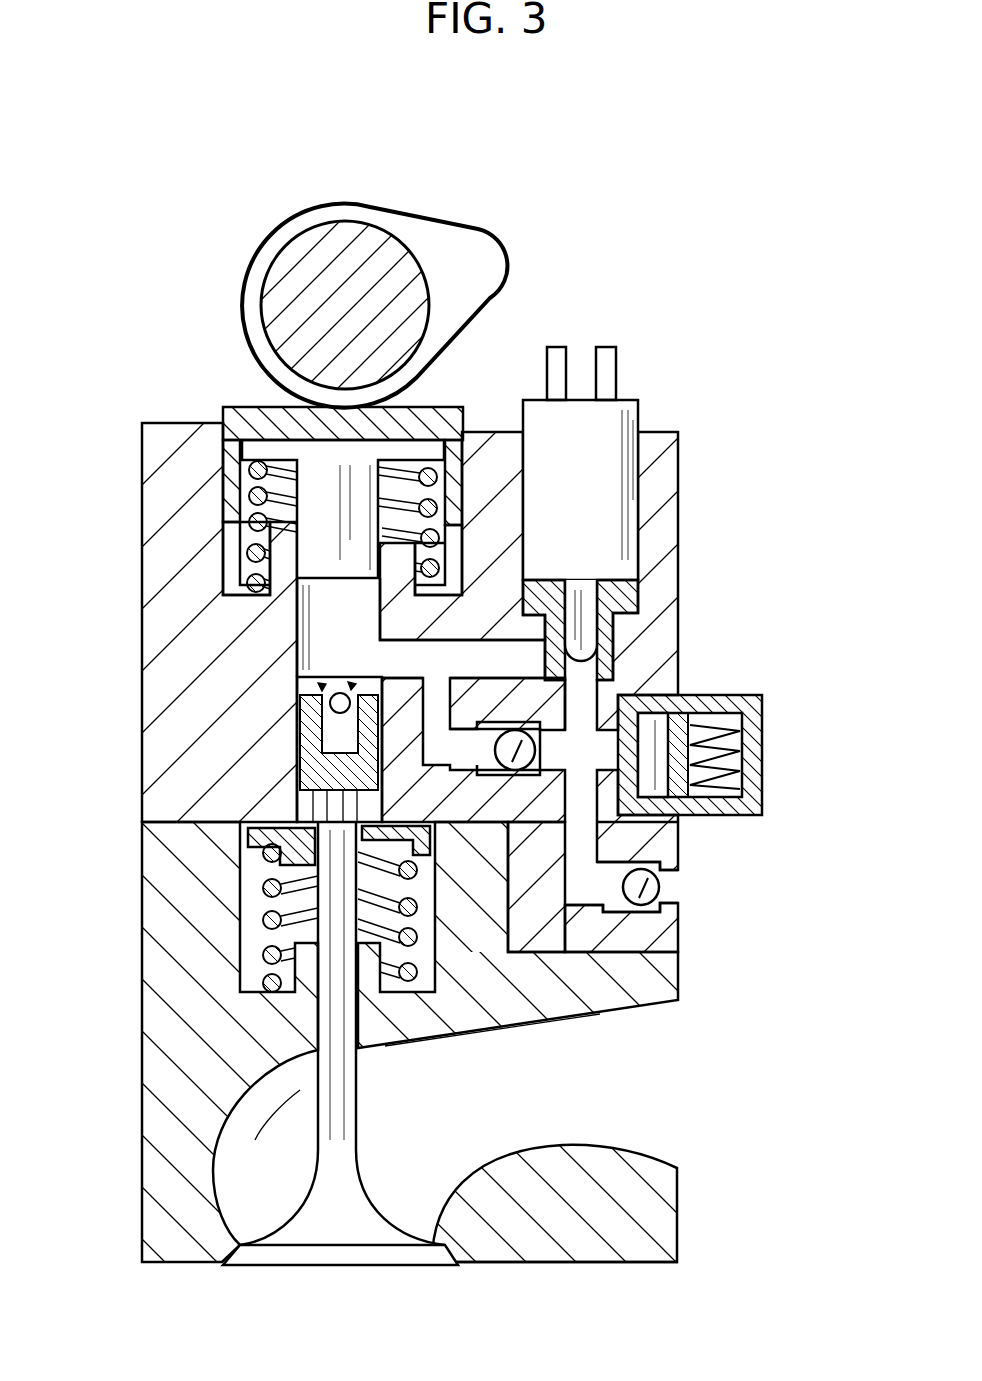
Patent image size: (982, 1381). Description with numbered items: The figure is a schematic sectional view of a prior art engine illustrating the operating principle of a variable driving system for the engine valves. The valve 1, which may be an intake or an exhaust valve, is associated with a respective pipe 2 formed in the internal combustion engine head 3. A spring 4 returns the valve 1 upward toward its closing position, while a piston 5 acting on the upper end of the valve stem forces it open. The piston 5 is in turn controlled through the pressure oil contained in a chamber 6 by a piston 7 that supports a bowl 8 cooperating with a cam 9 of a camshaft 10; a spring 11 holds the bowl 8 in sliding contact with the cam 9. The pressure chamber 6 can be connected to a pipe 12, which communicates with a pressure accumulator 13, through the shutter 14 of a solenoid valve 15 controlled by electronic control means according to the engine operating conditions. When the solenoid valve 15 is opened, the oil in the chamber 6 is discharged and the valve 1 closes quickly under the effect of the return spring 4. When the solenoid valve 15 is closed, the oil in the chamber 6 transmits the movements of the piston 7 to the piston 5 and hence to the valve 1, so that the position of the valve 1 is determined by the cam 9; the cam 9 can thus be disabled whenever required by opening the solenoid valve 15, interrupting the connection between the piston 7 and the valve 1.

The valve 1 is at (330, 1225).
The pipe 2 is at (613, 1147).
The internal combustion engine head 3 is at (160, 1060).
The spring 4 is at (262, 917).
The piston 5 is at (305, 745).
The chamber 6 is at (327, 640).
The piston 7 is at (327, 510).
The bowl 8 is at (258, 420).
The cam 9 is at (487, 270).
The camshaft 10 is at (414, 243).
The spring 11 is at (465, 480).
The pipe 12 is at (608, 752).
The pressure accumulator 13 is at (653, 770).
The shutter 14 is at (572, 636).
The solenoid valve 15 is at (585, 440).